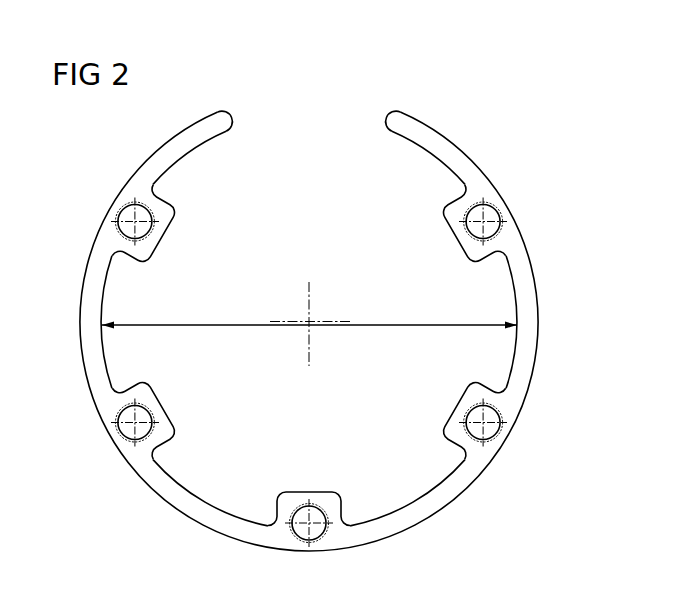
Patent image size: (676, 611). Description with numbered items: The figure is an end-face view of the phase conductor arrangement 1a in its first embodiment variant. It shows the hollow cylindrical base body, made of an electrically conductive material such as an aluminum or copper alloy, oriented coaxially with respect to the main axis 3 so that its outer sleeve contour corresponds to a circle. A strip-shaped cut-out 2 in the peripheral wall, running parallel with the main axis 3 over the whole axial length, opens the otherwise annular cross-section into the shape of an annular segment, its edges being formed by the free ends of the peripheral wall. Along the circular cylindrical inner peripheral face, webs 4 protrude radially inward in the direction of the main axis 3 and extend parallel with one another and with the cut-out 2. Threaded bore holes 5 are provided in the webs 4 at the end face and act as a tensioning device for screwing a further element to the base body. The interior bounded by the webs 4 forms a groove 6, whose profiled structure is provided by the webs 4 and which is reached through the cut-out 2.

The phase conductor arrangement 1a is at (538, 328).
The cut-out 2 is at (385, 108).
The main axis 3 is at (311, 320).
The webs 4 is at (125, 258).
The threaded bore holes 5 is at (130, 206).
The groove 6 is at (489, 322).